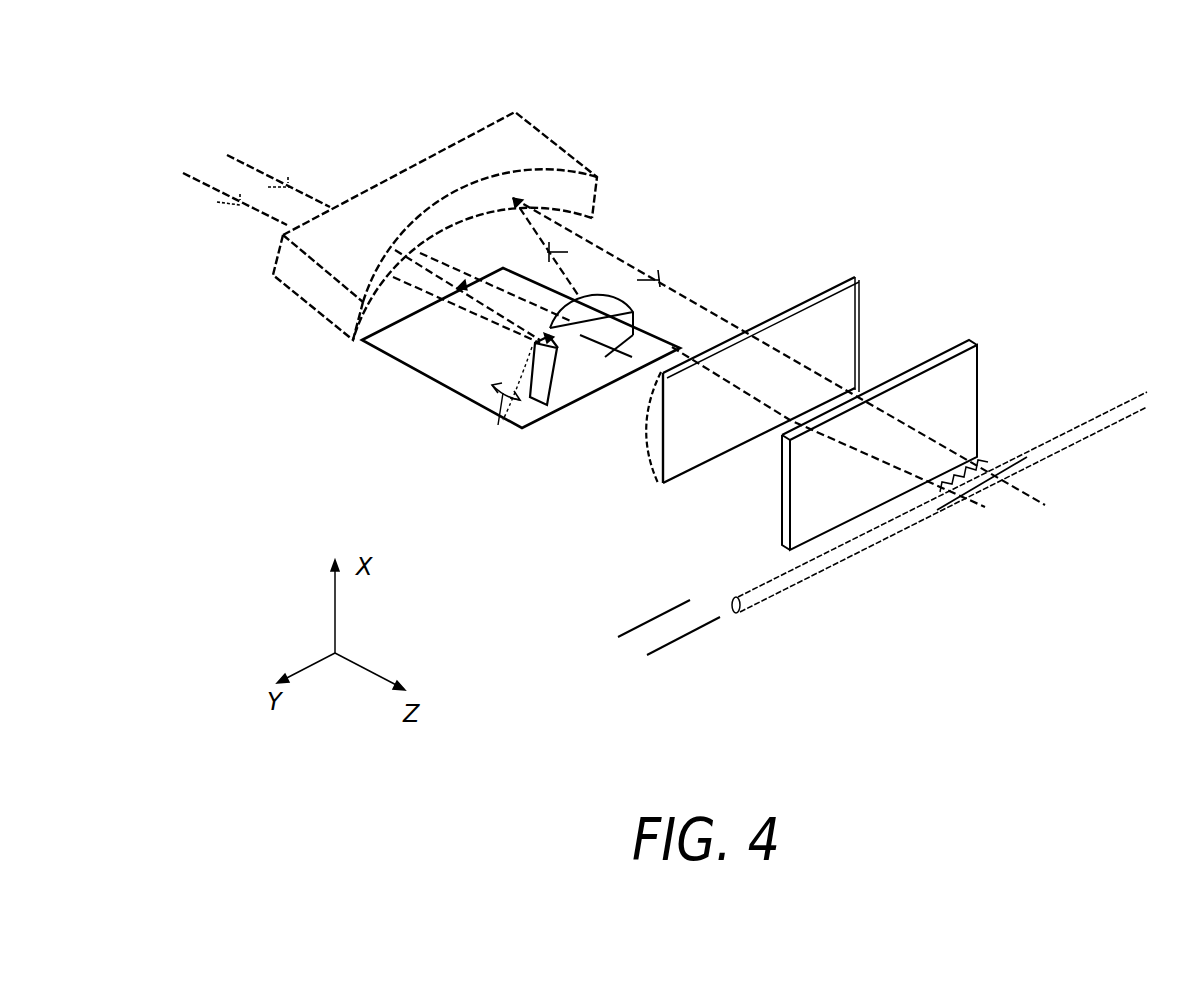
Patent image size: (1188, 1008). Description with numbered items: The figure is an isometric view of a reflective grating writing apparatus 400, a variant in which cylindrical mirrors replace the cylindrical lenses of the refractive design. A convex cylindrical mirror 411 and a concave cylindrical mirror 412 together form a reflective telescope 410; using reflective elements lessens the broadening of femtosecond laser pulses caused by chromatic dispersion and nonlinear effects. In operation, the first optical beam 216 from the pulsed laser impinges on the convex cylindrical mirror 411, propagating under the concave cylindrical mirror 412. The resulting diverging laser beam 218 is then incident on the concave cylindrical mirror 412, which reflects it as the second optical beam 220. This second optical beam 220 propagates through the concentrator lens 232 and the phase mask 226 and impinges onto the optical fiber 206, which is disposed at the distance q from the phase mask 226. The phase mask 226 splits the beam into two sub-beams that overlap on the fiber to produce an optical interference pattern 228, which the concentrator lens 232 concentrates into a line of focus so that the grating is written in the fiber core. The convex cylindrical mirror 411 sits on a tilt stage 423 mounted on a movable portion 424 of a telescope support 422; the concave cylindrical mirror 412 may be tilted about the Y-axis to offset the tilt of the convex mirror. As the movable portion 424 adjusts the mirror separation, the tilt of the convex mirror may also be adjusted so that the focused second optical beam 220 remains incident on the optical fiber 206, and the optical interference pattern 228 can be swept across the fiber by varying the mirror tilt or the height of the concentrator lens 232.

The apparatus 400 is at (1067, 88).
The reflective telescope 410 is at (687, 278).
The convex cylindrical mirror 411 is at (593, 360).
The concave cylindrical mirror 412 is at (330, 297).
The first optical beam 216 is at (290, 208).
The diverging optical beam 218 is at (500, 243).
The second optical beam 220 is at (707, 313).
The concentrator lens 232 is at (807, 327).
The phase mask 226 is at (962, 378).
The optical interference pattern 228 is at (997, 453).
The optical fiber 206 is at (932, 512).
The telescope support 422 is at (437, 378).
The tilt stage 423 is at (505, 351).
The movable portion 424 is at (503, 420).